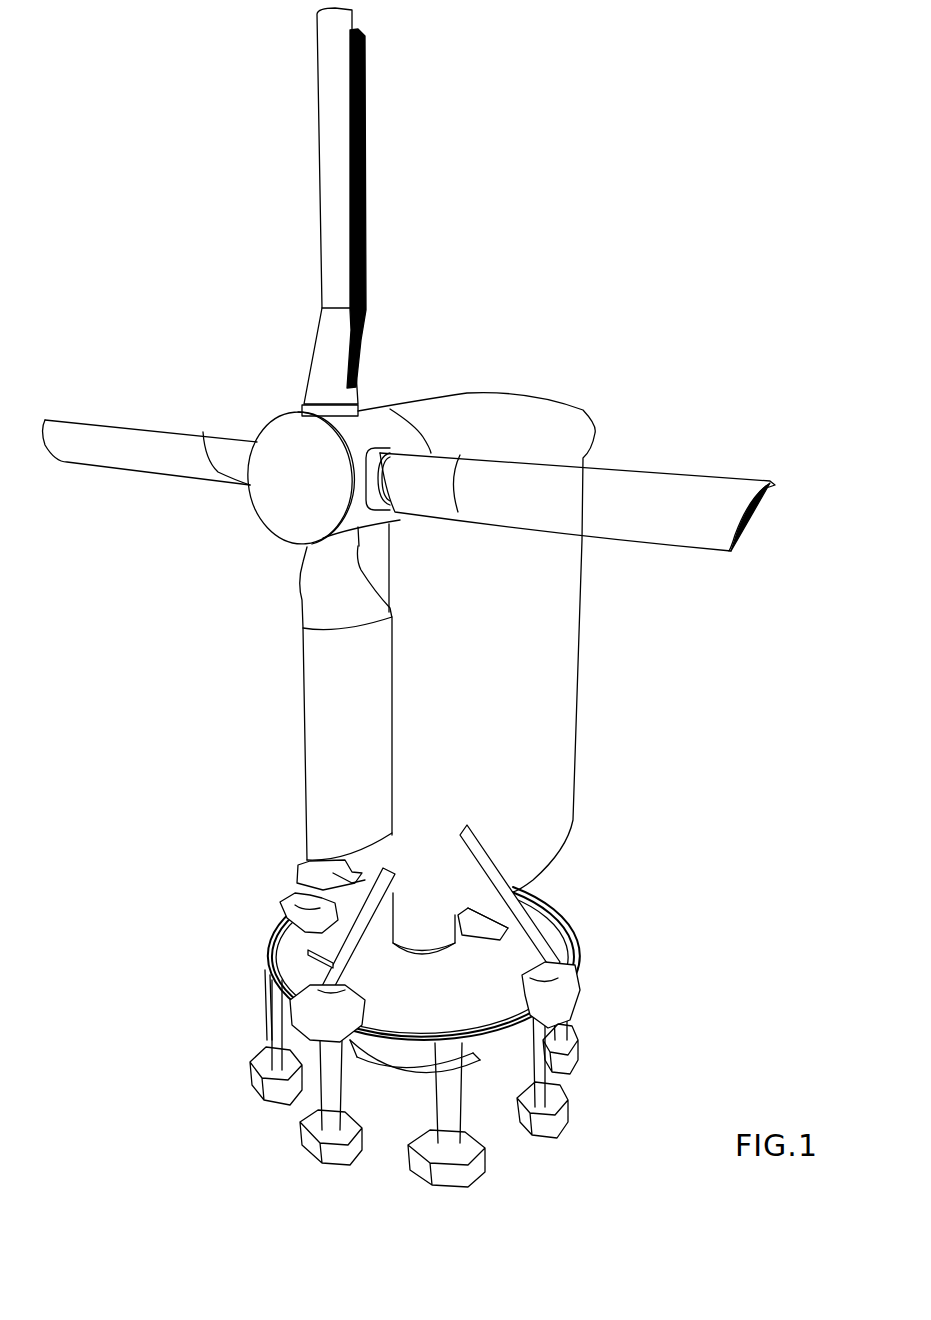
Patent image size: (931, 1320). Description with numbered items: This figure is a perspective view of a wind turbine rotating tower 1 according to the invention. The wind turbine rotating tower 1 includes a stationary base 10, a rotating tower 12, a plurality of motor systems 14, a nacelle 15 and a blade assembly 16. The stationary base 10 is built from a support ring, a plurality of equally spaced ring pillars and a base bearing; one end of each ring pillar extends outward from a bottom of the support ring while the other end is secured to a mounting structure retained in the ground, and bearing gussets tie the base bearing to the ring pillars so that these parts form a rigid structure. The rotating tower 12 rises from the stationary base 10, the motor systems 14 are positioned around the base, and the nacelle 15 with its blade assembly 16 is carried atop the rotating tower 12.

The wind turbine rotating tower 1 is at (409, 597).
The stationary base 10 is at (438, 1006).
The rotating tower 12 is at (602, 688).
The motor systems 14 is at (599, 975).
The nacelle 15 is at (439, 352).
The blade assembly 16 is at (224, 182).